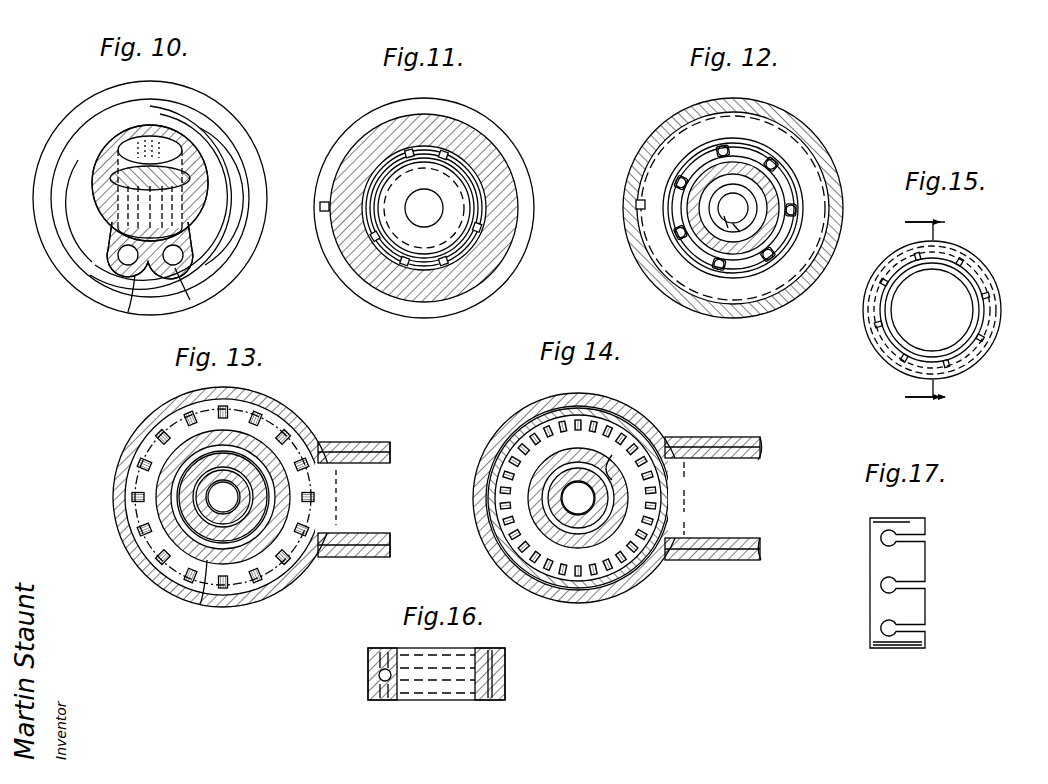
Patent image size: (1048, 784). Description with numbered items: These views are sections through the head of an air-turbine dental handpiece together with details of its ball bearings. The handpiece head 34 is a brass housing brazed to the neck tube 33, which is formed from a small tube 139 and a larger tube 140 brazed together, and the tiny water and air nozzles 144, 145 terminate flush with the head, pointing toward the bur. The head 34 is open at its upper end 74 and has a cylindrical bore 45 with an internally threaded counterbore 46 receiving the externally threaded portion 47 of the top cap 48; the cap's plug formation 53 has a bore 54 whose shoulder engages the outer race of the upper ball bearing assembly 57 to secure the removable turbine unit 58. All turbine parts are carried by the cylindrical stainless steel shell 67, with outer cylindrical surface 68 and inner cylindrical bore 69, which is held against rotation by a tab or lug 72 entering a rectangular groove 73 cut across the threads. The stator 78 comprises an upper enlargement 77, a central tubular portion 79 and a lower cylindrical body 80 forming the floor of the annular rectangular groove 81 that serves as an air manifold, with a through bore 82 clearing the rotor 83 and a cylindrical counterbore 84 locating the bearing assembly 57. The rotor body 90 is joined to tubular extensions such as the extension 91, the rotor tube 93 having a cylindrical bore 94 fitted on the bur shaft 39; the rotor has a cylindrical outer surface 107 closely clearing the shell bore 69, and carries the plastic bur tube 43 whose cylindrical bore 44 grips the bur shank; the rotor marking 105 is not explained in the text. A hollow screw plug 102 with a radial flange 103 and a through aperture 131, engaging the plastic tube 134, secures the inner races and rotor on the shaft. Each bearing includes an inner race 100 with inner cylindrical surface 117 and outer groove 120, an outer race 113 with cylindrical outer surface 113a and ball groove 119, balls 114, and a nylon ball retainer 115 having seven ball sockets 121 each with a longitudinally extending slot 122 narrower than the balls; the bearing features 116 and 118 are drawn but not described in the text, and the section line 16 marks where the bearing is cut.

In FIG. 15, the section line 16— 16 is at (912, 310).
In FIG. 13, the neck tube 33 is at (380, 440).
In FIG. 14, the neck tube 33 is at (720, 437).
In FIG. 11, the handpiece head 34 is at (358, 117).
In FIG. 12, the handpiece head 34 is at (675, 112).
In FIG. 13, the handpiece head 34 is at (155, 408).
In FIG. 14, the handpiece head 34 is at (527, 406).
In FIG. 12, the bur shaft 39 is at (763, 200).
In FIG. 13, the bur shaft 39 is at (197, 517).
In FIG. 14, the bur shaft 39 is at (545, 492).
In FIG. 12, the plastic bur tube 43 is at (765, 158).
In FIG. 12, the cylindrical bore 44 is at (682, 250).
In FIG. 13, the cylindrical bore 44 is at (223, 497).
In FIG. 14, the cylindrical bore 44 is at (578, 498).
In FIG. 11, the cylindrical bore 45 is at (453, 153).
In FIG. 12, the cylindrical bore 45 is at (657, 147).
In FIG. 13, the cylindrical bore 45 is at (277, 425).
In FIG. 14, the cylindrical bore 45 is at (508, 430).
In FIG. 11, the internally threaded counterbore 46 is at (497, 178).
In FIG. 11, the externally threaded portion 47 is at (507, 177).
In FIG. 11, the top cap 48 is at (470, 162).
In FIG. 11, the plug formation 53 is at (490, 245).
In FIG. 11, the bore 54 is at (475, 248).
In FIG. 11, the upper ball bearing assembly 57 is at (442, 145).
In FIG. 12, the upper ball bearing assembly 57 is at (792, 170).
In FIG. 13, the removable turbine unit 58 is at (267, 578).
In FIG. 14, the removable turbine unit 58 is at (493, 523).
In FIG. 14, the cylindrical stainless steel shell 67 is at (487, 527).
In FIG. 14, the outer cylindrical surface 68 is at (502, 543).
In FIG. 14, the inner cylindrical bore 69 is at (518, 557).
In FIG. 11, the tab or lug 72 is at (332, 208).
In FIG. 12, the tab or lug 72 is at (637, 212).
In FIG. 11, the rectangular groove 73 is at (325, 203).
In FIG. 12, the rectangular groove 73 is at (638, 203).
In FIG. 11, the upper end 74 is at (330, 150).
In FIG. 12, the upper enlargement 77 is at (663, 172).
In FIG. 13, the stator 78 is at (308, 440).
In FIG. 13, the central tubular portion 79 is at (318, 447).
In FIG. 13, the lower cylindrical body 80 is at (157, 448).
In FIG. 13, the annular rectangular groove 81 is at (327, 513).
In FIG. 13, the through bore 82 is at (280, 425).
In FIG. 14, the rotor 83 is at (523, 467).
In FIG. 12, the cylindrical counterbore 84 is at (668, 188).
In FIG. 14, the rotor body 90 is at (602, 560).
In FIG. 14, the tubular extension 91 is at (612, 455).
In FIG. 13, the rotor tube 93 is at (207, 580).
In FIG. 14, the cylindrical bore 94 is at (568, 547).
In FIG. 15, the inner race 100 is at (973, 307).
In FIG. 16, the inner race 100 is at (408, 697).
In FIG. 11, the screw plug 102 is at (402, 255).
In FIG. 11, the radial flange 103 is at (452, 217).
In FIG. 14, the marking 105 is at (528, 552).
In FIG. 14, the cylindrical outer surface 107 is at (573, 583).
In FIG. 15, the outer race 113 is at (988, 260).
In FIG. 16, the outer race 113 is at (370, 662).
In FIG. 15, the cylindrical outer surface 113a is at (1002, 292).
In FIG. 15, the balls 114 is at (963, 375).
In FIG. 16, the balls 114 is at (375, 677).
In FIG. 15, the ball retainer 115 is at (977, 347).
In FIG. 16, the ball retainer 115 is at (492, 658).
In FIG. 17, the ball retainer 115 is at (883, 612).
In FIG. 15, the ring 116 is at (913, 332).
In FIG. 15, the inner cylindrical surface 117 is at (893, 307).
In FIG. 16, the inner cylindrical surface 117 is at (398, 668).
In FIG. 15, the raceway 118 is at (892, 370).
In FIG. 16, the ball groove 119 is at (495, 670).
In FIG. 16, the outer groove 120 is at (478, 677).
In FIG. 17, the ball sockets 121 is at (890, 573).
In FIG. 17, the longitudinally extending slot 122 is at (910, 583).
In FIG. 11, the through aperture 131 is at (433, 205).
In FIG. 13, the plastic tube 134 is at (312, 548).
In FIG. 14, the plastic tube 134 is at (627, 590).
In FIG. 13, the small tube 139 is at (370, 493).
In FIG. 10, the larger tube 140 is at (170, 148).
In FIG. 14, the larger tube 140 is at (722, 530).
In FIG. 10, the water nozzle 144 is at (175, 258).
In FIG. 10, the air nozzle 145 is at (128, 310).